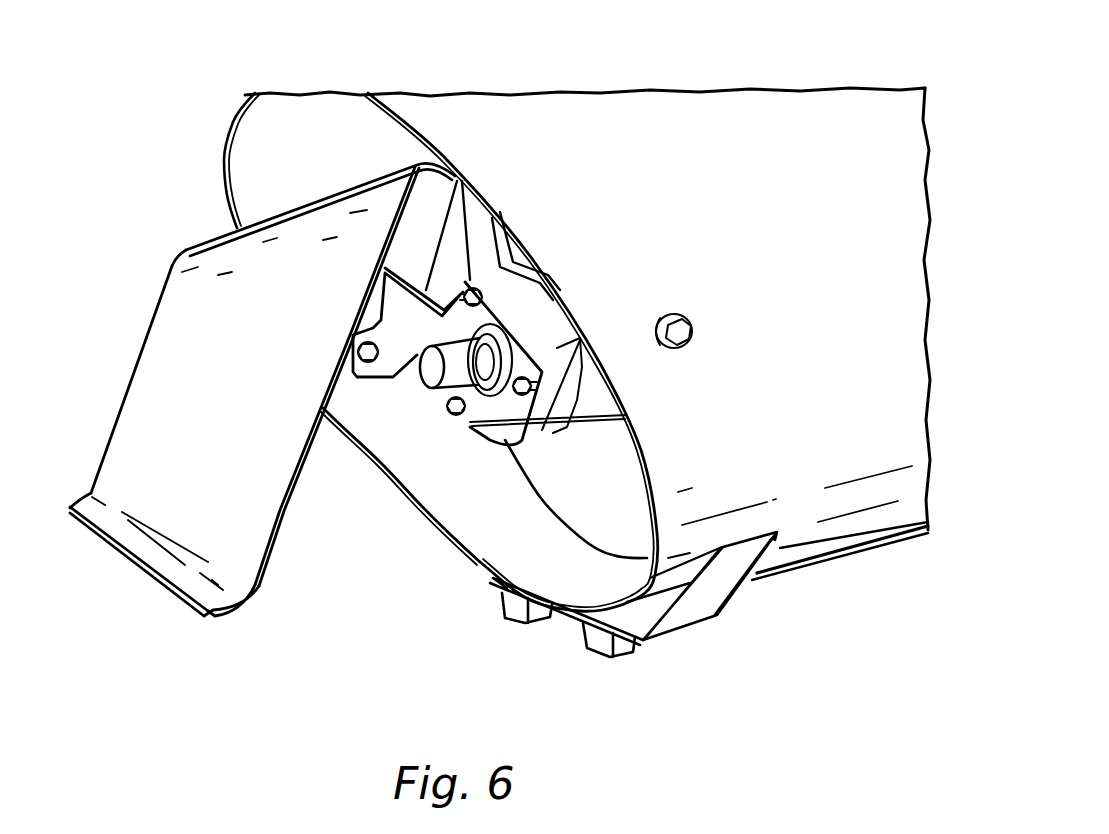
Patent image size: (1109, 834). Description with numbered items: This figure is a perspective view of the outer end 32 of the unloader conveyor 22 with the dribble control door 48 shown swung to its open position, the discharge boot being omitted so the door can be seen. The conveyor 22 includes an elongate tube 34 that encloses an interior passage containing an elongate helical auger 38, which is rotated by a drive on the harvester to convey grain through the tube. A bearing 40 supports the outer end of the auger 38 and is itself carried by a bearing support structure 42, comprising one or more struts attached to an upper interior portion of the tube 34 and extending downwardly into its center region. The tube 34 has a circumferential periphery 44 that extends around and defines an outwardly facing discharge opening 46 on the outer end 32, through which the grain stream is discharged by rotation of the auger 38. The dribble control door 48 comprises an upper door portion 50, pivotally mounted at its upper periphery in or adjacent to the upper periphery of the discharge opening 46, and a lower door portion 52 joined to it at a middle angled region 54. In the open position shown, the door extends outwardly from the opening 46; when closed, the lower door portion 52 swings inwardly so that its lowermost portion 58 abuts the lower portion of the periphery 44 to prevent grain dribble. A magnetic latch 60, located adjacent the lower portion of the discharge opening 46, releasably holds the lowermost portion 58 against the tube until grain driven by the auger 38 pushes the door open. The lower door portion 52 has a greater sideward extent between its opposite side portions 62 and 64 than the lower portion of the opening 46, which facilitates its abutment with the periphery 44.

The conveyor 22 is at (816, 90).
The outer end 32 is at (408, 93).
The elongate tube 34 is at (606, 112).
The elongate helical auger 38 is at (593, 545).
The bearing 40 is at (497, 420).
The bearing support structure 42 is at (477, 226).
The circumferential periphery 44 is at (230, 138).
The discharge opening 46 is at (407, 452).
The dribble control door 48 is at (253, 393).
The upper door portion 50 is at (415, 160).
The lower door portion 52 is at (140, 350).
The middle angled region 54 is at (183, 250).
The lowermost portion 58 is at (130, 560).
The latch 60 is at (503, 605).
The side portion 62 is at (88, 496).
The side portion 64 is at (255, 580).